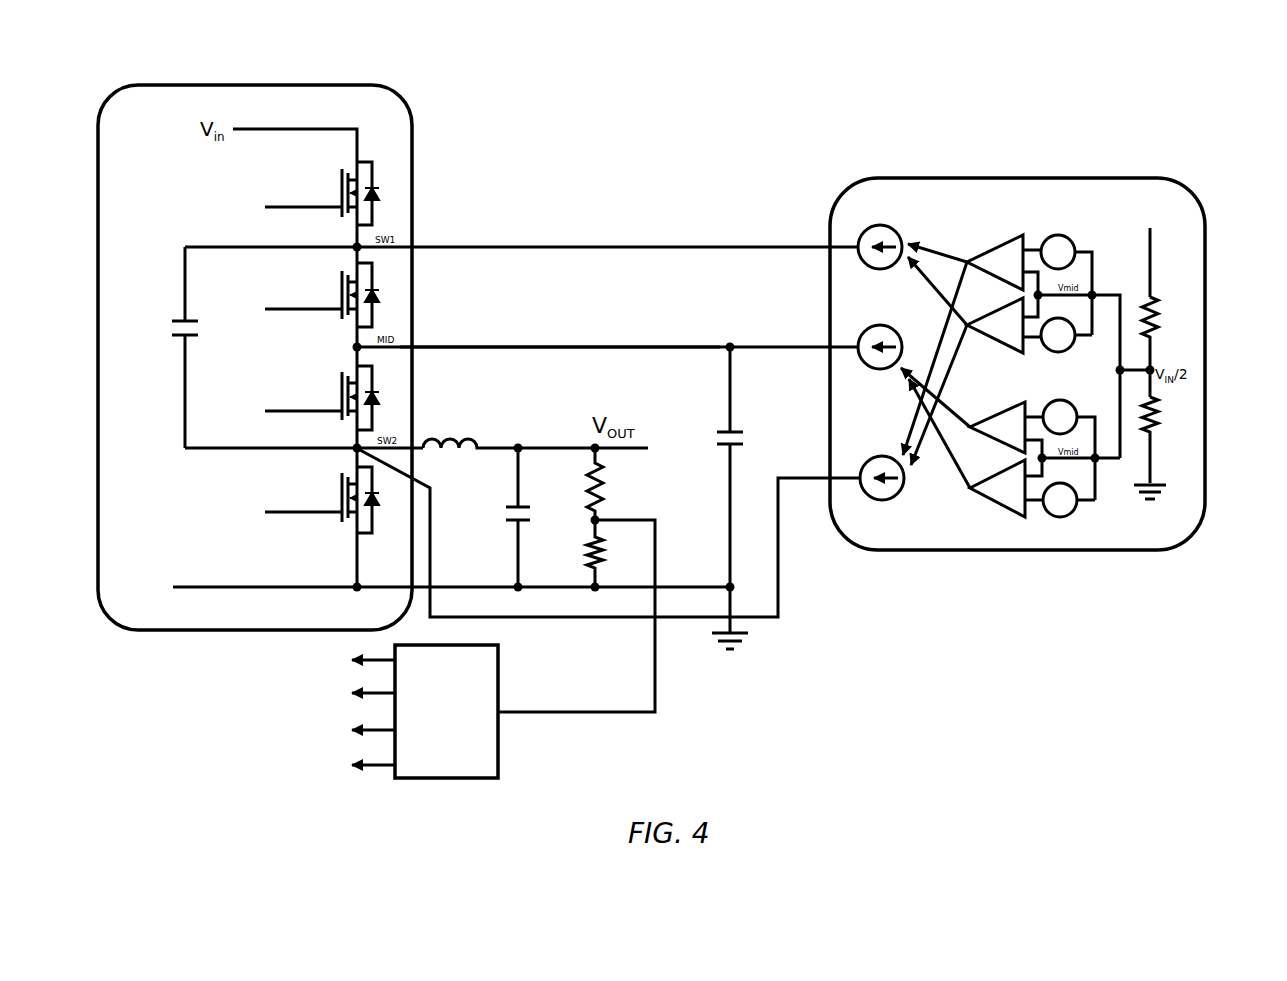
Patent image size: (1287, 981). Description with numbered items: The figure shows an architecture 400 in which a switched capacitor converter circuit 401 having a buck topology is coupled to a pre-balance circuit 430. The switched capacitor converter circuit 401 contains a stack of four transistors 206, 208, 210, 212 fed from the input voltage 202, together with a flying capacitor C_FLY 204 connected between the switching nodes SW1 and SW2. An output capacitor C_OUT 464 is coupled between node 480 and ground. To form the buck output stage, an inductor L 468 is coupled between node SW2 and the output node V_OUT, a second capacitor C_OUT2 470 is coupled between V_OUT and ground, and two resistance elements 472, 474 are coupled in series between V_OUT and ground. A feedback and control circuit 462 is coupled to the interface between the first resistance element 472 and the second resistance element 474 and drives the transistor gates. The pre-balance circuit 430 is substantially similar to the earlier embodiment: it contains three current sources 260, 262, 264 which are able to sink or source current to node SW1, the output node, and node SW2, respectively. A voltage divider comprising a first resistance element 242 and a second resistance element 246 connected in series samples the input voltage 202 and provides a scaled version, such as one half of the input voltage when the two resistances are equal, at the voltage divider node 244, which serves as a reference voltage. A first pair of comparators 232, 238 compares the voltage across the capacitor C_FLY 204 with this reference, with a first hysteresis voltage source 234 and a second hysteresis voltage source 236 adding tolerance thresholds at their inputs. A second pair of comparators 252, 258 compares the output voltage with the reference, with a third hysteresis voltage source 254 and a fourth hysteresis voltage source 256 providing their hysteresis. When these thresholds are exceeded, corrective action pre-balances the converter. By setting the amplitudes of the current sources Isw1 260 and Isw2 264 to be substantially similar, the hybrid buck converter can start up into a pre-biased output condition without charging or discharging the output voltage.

The architecture 400 is at (160, 45).
The switched capacitor converter circuit 401 is at (363, 84).
The input voltage 202 is at (1160, 208).
The capacitor C_FLY 204 is at (184, 318).
The transistor Q1 206 is at (340, 172).
The transistor Q2 208 is at (340, 279).
The transistor Q3 210 is at (340, 380).
The transistor Q4 212 is at (340, 524).
The first comparator 232 is at (995, 248).
The first hysteresis voltage source 234 is at (1068, 238).
The second hysteresis voltage source 236 is at (1050, 356).
The second comparator 238 is at (1010, 352).
The first resistance element 242 is at (1156, 305).
The voltage divider node 244 is at (1156, 352).
The second resistance element 246 is at (1162, 444).
The comparator 252 is at (1010, 400).
The third hysteresis voltage source 254 is at (1052, 400).
The fourth hysteresis voltage source 256 is at (1052, 516).
The comparator 258 is at (1003, 510).
The current source Isw1 260 is at (880, 224).
The current source 262 is at (880, 324).
The current source Isw2 264 is at (882, 455).
The pre-balance circuit 430 is at (1075, 177).
The feedback and control circuit 462 is at (498, 683).
The output capacitor C_OUT 464 is at (721, 431).
The inductor L 468 is at (468, 430).
The second capacitor C_OUT2 470 is at (517, 505).
The first resistance element 472 is at (606, 489).
The second resistance element 474 is at (589, 550).
The node 480 is at (571, 345).